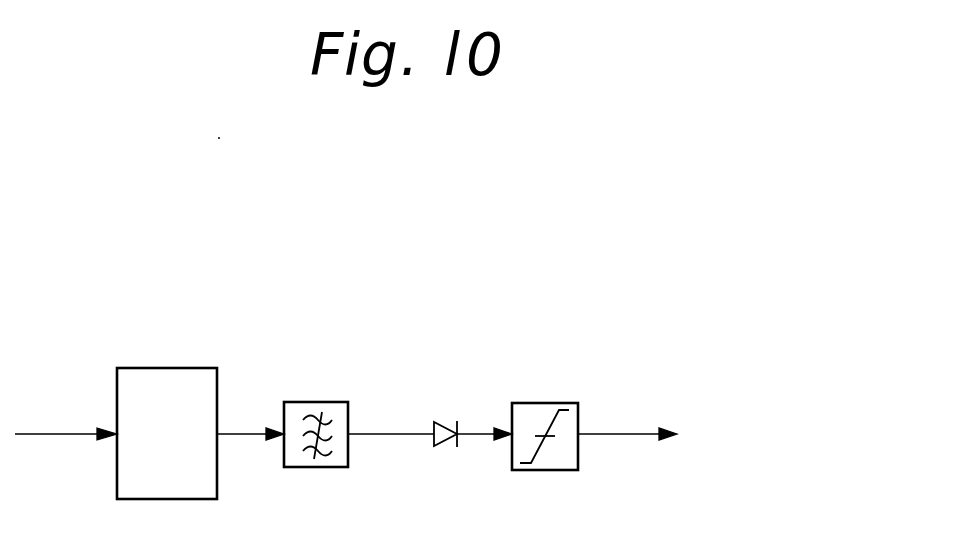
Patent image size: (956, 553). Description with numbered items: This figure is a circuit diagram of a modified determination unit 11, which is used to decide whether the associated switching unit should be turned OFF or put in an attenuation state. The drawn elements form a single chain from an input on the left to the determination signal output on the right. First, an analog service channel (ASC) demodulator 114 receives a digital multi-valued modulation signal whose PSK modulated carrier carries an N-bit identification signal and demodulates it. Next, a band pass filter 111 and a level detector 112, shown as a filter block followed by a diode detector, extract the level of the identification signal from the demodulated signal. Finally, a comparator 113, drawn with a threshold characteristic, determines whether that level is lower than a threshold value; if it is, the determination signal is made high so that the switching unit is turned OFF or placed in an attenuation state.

The determination unit 11 is at (690, 195).
The analog service channel (ASC) demodulator 114 is at (205, 368).
The band pass filter 111 is at (333, 402).
The level detector 112 is at (490, 370).
The comparator 113 is at (627, 362).